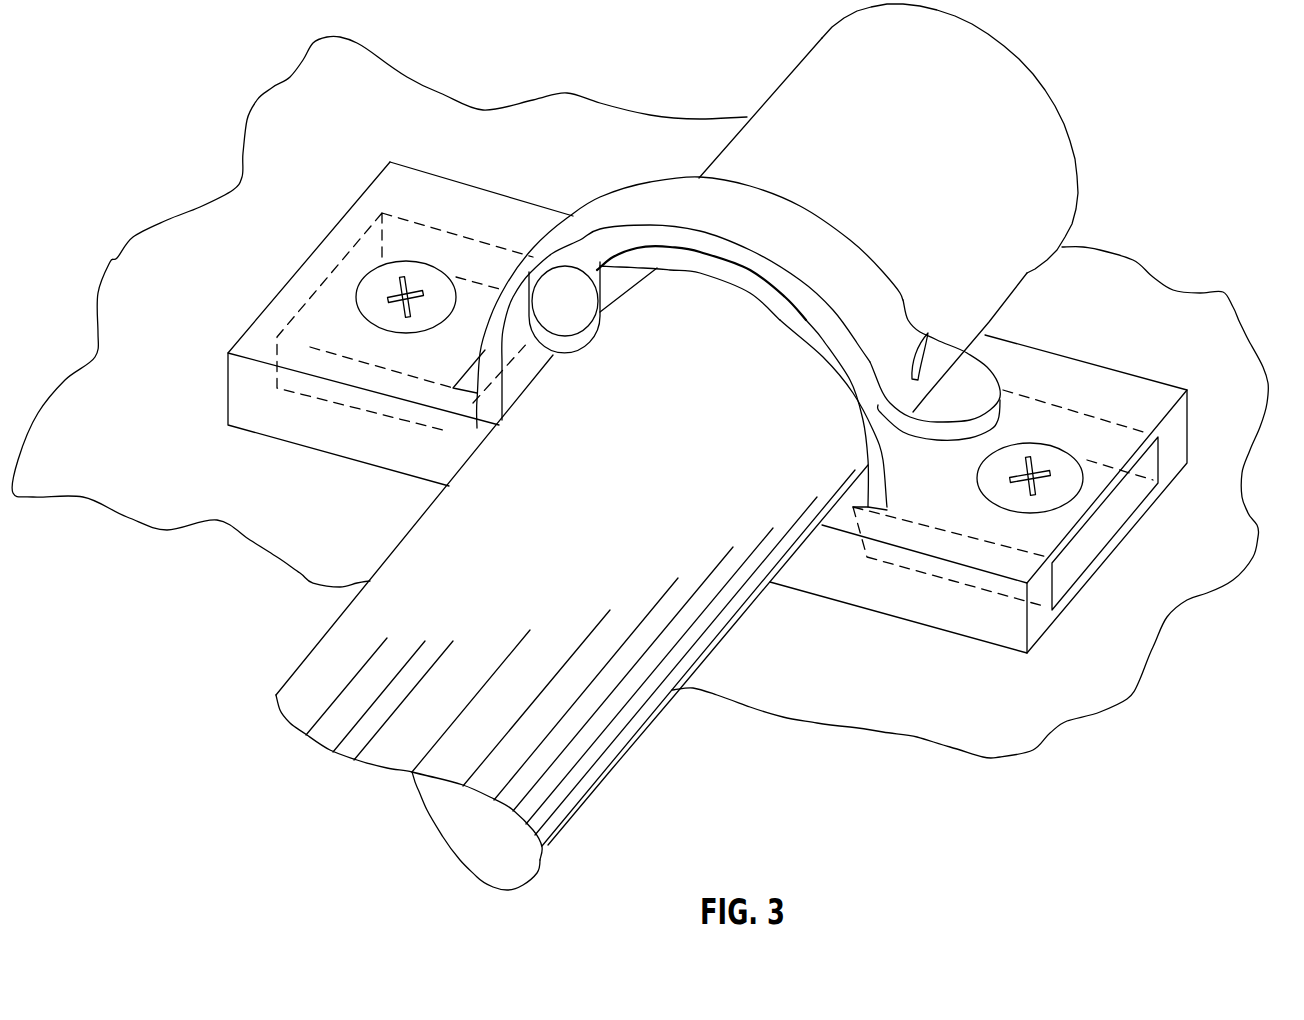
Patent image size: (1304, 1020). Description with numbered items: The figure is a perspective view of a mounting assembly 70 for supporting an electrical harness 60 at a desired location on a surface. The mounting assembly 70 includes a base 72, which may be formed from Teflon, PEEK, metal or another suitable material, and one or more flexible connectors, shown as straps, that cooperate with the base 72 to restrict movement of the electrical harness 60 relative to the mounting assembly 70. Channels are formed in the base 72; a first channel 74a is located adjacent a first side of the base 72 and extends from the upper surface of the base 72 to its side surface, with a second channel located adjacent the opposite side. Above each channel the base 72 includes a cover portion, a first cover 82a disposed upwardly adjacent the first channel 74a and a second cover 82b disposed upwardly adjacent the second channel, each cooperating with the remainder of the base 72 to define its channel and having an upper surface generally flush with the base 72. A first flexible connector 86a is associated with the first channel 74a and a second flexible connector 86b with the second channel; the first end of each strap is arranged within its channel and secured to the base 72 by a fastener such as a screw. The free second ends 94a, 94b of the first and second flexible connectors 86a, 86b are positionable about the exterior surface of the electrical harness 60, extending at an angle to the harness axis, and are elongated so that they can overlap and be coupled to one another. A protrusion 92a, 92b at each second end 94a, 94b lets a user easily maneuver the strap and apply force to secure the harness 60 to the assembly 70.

The electrical harness 60 is at (387, 567).
The mounting assembly 70 is at (1226, 169).
The base 72 is at (863, 590).
The first channel 74a is at (1127, 527).
The first cover 82a is at (1048, 533).
The second cover 82b is at (405, 233).
The first flexible connector 86a is at (915, 458).
The second flexible connector 86b is at (677, 190).
The protrusion 92a is at (570, 310).
The protrusion 92b is at (937, 337).
The second end 94a is at (577, 287).
The second end 94b is at (925, 377).